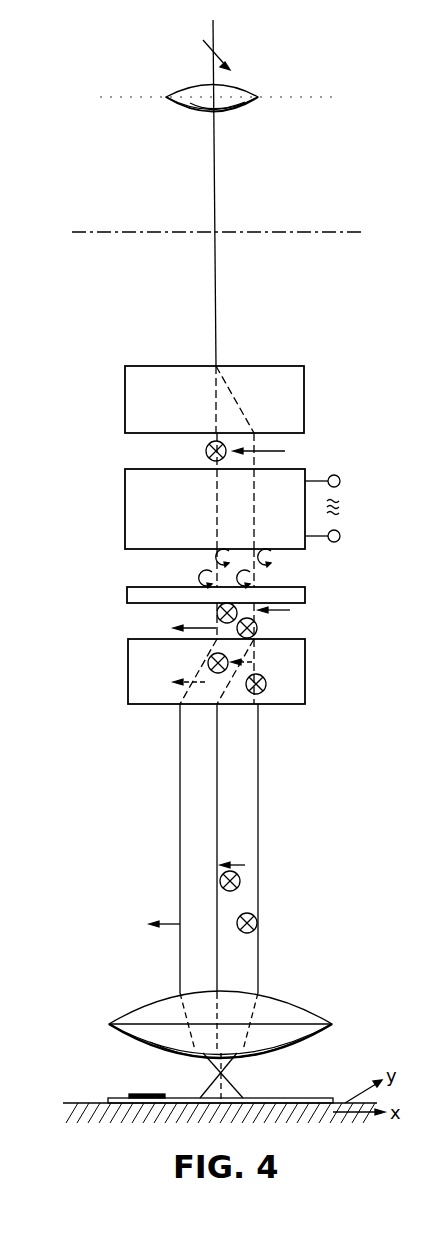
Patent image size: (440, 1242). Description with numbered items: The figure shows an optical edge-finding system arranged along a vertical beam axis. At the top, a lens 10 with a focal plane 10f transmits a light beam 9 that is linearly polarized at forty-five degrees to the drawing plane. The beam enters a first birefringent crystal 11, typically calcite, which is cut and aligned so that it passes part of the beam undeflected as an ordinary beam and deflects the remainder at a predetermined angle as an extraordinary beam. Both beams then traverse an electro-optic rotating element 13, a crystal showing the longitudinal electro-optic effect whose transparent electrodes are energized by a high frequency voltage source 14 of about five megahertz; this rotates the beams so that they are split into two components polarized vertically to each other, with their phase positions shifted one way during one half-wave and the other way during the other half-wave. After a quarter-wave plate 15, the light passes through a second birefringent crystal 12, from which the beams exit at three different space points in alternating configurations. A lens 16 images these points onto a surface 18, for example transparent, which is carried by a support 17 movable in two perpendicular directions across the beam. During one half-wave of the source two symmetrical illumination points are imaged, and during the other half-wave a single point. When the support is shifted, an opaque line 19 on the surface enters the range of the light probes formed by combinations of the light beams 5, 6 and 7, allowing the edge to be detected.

The light beam 9 is at (214, 36).
The lens 10 is at (187, 97).
The focal plane 10f is at (100, 232).
The birefringent crystal 11 is at (130, 395).
The electro-optic rotating element 13 is at (138, 507).
The high frequency voltage source 14 is at (344, 507).
The quarter-wave plate 15 is at (135, 596).
The birefringent crystal 12 is at (138, 669).
The lens 16 is at (147, 1018).
The support 17 is at (88, 1105).
The surface 18 is at (298, 1100).
The line 19 is at (152, 1094).
The light beam 5 is at (226, 1090).
The light beam 6 is at (202, 1095).
The light beam 7 is at (245, 1098).